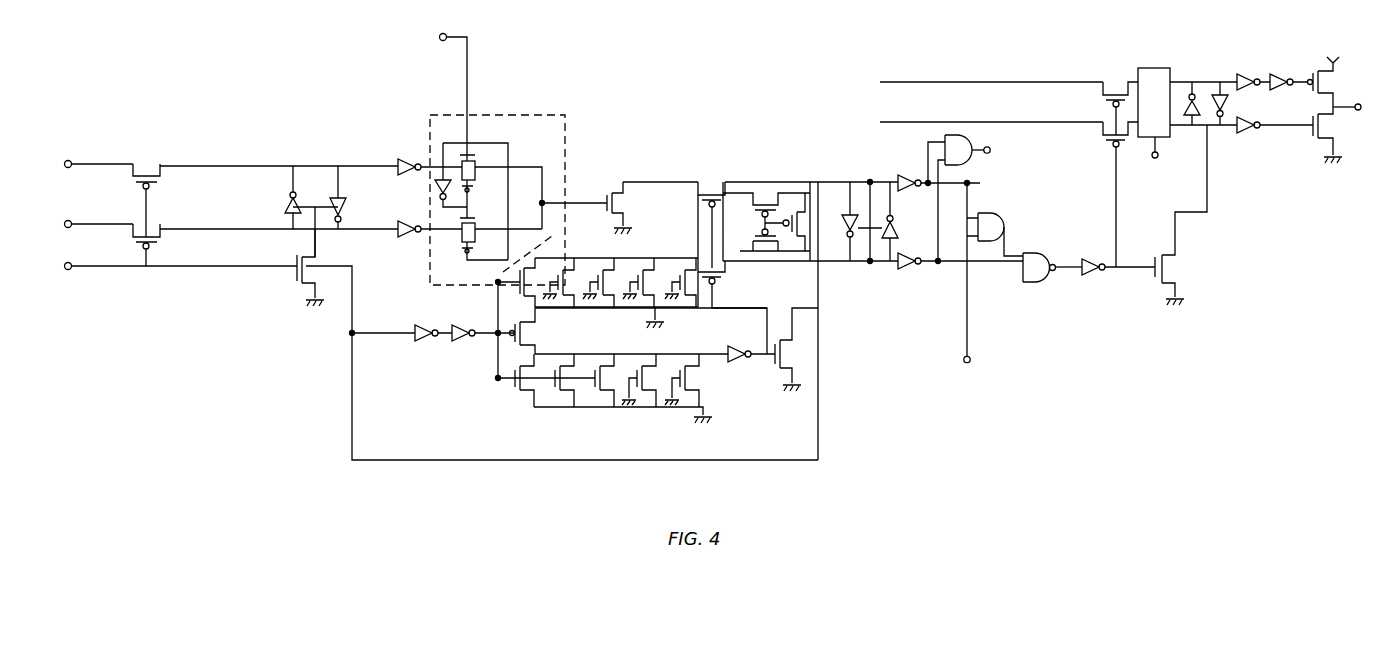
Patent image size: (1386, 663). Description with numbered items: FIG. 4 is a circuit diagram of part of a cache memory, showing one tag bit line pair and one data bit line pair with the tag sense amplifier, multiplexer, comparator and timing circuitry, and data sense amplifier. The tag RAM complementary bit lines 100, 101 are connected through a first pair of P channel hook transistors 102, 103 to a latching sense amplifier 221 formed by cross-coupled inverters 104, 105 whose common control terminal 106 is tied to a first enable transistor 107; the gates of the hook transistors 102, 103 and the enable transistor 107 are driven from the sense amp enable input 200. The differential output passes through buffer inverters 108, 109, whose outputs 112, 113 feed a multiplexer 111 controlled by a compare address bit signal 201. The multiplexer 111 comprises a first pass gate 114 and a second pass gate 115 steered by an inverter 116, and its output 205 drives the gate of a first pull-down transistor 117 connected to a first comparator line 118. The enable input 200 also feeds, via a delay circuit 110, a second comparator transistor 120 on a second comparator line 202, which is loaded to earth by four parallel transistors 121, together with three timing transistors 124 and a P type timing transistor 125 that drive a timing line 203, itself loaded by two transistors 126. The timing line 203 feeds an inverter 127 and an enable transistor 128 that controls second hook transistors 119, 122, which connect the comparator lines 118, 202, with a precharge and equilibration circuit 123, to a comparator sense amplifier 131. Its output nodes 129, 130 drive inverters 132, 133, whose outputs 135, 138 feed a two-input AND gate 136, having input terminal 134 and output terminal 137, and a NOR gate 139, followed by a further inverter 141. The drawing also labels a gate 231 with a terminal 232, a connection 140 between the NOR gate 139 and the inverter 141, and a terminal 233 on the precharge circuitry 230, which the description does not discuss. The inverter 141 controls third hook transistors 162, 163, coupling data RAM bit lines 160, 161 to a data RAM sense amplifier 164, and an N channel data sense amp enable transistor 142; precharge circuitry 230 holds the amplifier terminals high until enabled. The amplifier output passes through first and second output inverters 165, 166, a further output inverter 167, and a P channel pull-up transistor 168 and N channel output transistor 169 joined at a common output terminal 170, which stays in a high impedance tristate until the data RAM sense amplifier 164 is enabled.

The first tag RAM bit line 100 is at (86, 164).
The second tag RAM bit line 101 is at (86, 223).
The sense amp enable input 200 is at (106, 268).
The first P channel hook transistor 102 is at (144, 167).
The first P channel hook transistor 103 is at (159, 236).
The cross-coupled inverter 104 is at (282, 205).
The latching sense amplifier 221 is at (317, 205).
The cross-coupled inverter 105 is at (346, 224).
The common control terminal 106 is at (300, 254).
The first enable transistor 107 is at (296, 285).
The first buffer inverter 108 is at (392, 164).
The second buffer inverter 109 is at (396, 236).
The output of first inverter 112 is at (430, 165).
The output of second inverter 113 is at (430, 234).
The compare address bit input 201 is at (439, 37).
The multiplexer 111 is at (543, 114).
The first pass gate 114 is at (475, 161).
The second pass gate 115 is at (490, 209).
The inverter 116 is at (436, 186).
The multiplexer output 205 is at (547, 201).
The second comparator line 202 is at (553, 237).
The second N type comparator transistor 120 is at (495, 282).
The delay circuit 110 is at (450, 322).
The parallel N type load transistors 121 is at (642, 253).
The first pull-down N channel transistor 117 is at (622, 200).
The first comparator line 118 is at (673, 180).
The second P type hook transistor 119 is at (712, 190).
The first comparator output node 129 is at (829, 180).
The precharge and equilibration circuit 123 is at (783, 191).
The second P type hook transistor 122 is at (730, 272).
The second comparator output node 130 is at (827, 268).
The comparator sense amplifier 131 is at (868, 220).
The first inverter 132 is at (902, 177).
The output of first inverter 135 is at (968, 185).
The AND gate 231 is at (950, 135).
The output terminal 232 is at (991, 150).
The second inverter 133 is at (905, 270).
The output of second inverter 138 is at (978, 267).
The input terminal 134 is at (970, 359).
The AND gate 136 is at (997, 218).
The output terminal of AND gate 137 is at (1004, 239).
The NOR gate 139 is at (1027, 287).
The signal line 140 is at (1068, 266).
The further inverter 141 is at (1088, 277).
The N channel data sense amp enable transistor 142 is at (1176, 265).
The data RAM bit line 160 is at (880, 82).
The data RAM bit line 161 is at (880, 122).
The third P channel hook transistor 162 is at (1112, 82).
The third P channel hook transistor 163 is at (1102, 132).
The precharge circuitry 230 is at (1152, 67).
The terminal 233 is at (1155, 158).
The data RAM sense amplifier 164 is at (1203, 77).
The first output inverter 165 is at (1245, 77).
The further output inverter 167 is at (1277, 77).
The P channel pull-up transistor 168 is at (1332, 73).
The common output terminal 170 is at (1353, 110).
The second output inverter 166 is at (1243, 134).
The N channel output transistor 169 is at (1319, 144).
The P type timing transistor 125 is at (530, 310).
The inverter 127 is at (748, 362).
The N type enable transistor 128 is at (801, 353).
The timing line 203 is at (697, 353).
The N type timing transistors 124 is at (635, 413).
The N type load transistors 126 is at (710, 426).